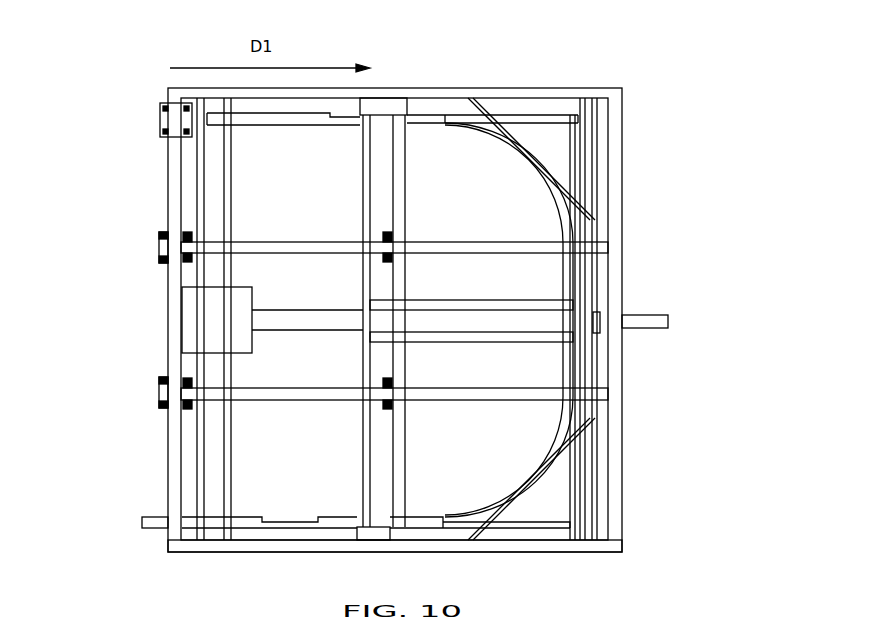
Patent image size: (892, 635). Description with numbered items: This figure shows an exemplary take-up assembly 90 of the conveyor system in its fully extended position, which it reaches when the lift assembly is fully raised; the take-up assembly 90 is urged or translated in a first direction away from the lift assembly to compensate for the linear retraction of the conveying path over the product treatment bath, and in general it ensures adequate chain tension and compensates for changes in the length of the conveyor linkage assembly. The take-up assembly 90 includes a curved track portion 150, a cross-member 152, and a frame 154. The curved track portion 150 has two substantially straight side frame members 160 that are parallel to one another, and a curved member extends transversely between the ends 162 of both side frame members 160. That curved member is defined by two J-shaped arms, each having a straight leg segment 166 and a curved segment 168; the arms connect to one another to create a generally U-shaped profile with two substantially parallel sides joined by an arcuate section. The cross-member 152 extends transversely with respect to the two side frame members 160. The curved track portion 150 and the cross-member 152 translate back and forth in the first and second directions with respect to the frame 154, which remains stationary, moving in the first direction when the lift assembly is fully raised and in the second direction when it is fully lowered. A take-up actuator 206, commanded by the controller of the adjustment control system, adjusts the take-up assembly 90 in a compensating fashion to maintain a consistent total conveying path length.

The take-up assembly 90 is at (710, 368).
The curved track portion 150 is at (567, 140).
The cross-member 152 is at (588, 184).
The frame 154 is at (503, 545).
The side frame members 160 is at (437, 90).
The ends 162 is at (450, 138).
The straight leg segment 166 is at (562, 268).
The curved segment 168 is at (538, 163).
The take-up actuator 206 is at (207, 328).